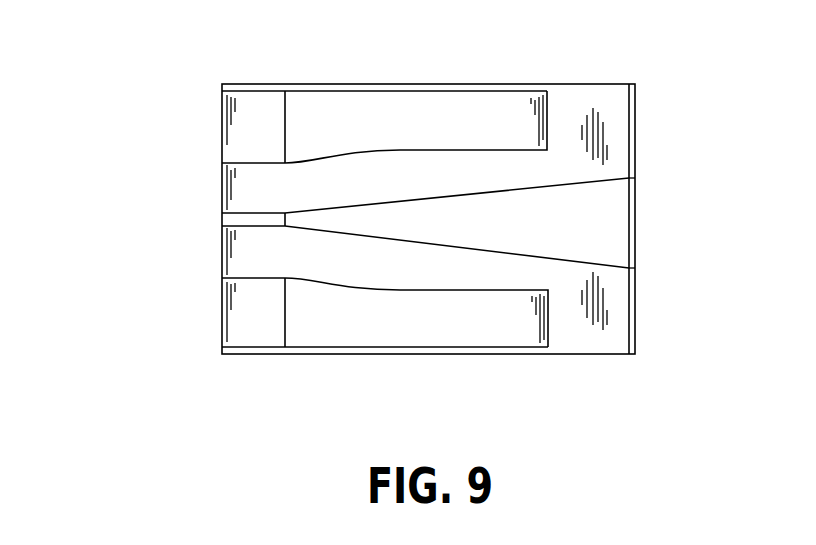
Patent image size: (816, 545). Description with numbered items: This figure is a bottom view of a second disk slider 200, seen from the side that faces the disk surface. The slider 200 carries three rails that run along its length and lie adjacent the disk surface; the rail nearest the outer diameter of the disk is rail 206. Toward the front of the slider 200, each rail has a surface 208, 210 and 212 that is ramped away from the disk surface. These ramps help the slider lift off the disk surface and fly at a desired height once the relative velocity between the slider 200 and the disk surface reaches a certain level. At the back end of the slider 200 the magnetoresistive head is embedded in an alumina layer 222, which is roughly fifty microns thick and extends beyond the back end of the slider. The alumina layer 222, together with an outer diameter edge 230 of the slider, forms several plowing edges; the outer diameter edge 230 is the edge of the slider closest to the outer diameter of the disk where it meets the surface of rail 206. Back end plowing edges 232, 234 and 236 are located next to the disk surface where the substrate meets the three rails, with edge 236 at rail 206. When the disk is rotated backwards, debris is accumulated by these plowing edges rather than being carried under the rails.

The second slider 200 is at (172, 122).
The rail 206 is at (303, 130).
The ramped surface 208 is at (245, 306).
The ramped surface 210 is at (243, 218).
The ramped surface 212 is at (240, 118).
The alumina layer 222 is at (632, 140).
The outer diameter edge 230 is at (325, 91).
The back end plowing edge 232 is at (548, 325).
The back end plowing edge 234 is at (633, 215).
The back end plowing edge 236 is at (548, 113).